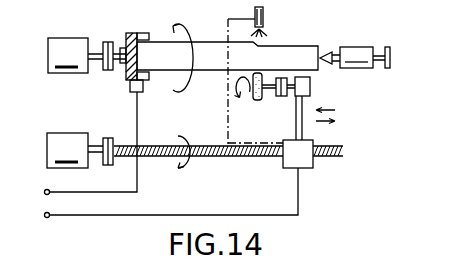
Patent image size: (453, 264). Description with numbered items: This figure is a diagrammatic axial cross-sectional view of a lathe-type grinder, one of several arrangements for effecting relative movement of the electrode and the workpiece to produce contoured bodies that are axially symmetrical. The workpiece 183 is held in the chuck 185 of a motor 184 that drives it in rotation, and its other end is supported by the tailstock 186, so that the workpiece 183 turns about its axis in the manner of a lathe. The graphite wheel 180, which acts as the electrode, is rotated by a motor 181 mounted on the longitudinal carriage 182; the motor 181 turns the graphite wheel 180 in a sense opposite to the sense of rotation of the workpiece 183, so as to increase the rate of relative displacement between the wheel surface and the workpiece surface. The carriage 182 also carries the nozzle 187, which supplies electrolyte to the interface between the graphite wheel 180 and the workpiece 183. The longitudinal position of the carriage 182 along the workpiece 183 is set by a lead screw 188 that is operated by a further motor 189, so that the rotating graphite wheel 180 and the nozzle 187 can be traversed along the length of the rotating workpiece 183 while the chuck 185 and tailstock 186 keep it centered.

The graphite wheel 180 is at (233, 90).
The motor 181 is at (310, 88).
The longitudinal carriage 182 is at (310, 166).
The workpiece 183 is at (306, 51).
The motor 184 is at (52, 55).
The chuck 185 is at (133, 35).
The tailstock 186 is at (349, 48).
The nozzle 187 is at (263, 23).
The lead screw 188 is at (238, 156).
The motor 189 is at (54, 156).